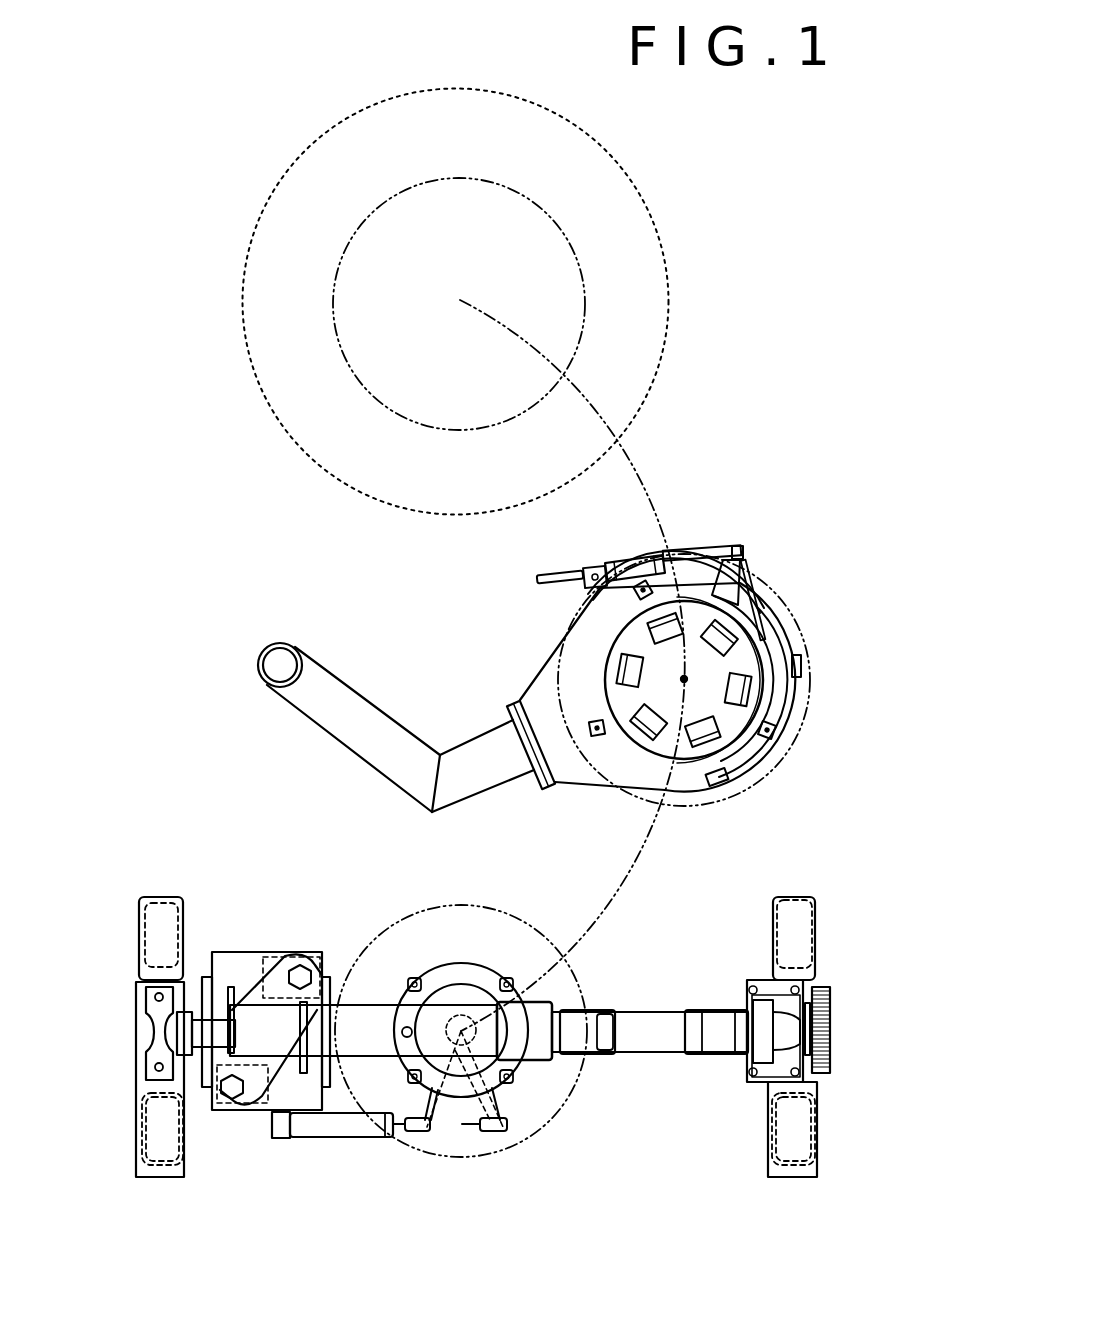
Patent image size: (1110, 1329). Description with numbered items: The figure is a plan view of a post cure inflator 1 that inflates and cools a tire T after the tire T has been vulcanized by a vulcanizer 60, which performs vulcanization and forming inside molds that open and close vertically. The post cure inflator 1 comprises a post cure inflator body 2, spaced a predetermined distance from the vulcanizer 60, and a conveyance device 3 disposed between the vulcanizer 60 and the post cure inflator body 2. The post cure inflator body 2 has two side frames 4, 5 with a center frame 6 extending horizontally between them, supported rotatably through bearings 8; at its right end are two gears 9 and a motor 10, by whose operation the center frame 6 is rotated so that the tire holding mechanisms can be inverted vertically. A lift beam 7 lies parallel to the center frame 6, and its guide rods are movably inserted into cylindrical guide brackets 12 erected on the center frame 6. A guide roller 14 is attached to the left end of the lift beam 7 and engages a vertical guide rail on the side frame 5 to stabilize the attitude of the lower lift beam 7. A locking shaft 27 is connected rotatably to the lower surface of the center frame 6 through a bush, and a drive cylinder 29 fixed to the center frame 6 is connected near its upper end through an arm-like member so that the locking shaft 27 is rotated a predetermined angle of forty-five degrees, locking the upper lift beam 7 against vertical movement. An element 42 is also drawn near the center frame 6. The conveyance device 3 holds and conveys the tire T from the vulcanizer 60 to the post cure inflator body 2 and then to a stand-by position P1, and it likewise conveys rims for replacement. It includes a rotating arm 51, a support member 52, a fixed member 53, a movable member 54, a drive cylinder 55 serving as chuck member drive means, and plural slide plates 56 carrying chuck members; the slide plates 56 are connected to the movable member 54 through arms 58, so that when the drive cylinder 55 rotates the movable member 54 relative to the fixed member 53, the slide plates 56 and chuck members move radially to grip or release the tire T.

The post cure inflator 1 is at (188, 592).
The post cure inflator body 2 is at (228, 862).
The conveyance device 3 is at (377, 602).
The side frame 4 is at (792, 1180).
The side frame 5 is at (158, 1180).
The center frame 6 is at (668, 1055).
The lift beam 7 is at (373, 1023).
The bearing 8 is at (152, 1030).
The gear 9 is at (828, 1027).
The motor 10 is at (716, 1023).
The guide bracket 12 is at (290, 957).
The guide roller 14 is at (200, 1030).
The locking shaft 27 is at (455, 1003).
The drive cylinder 29 is at (342, 1125).
The bushing 42 is at (580, 1030).
The rotating arm 51 is at (373, 727).
The support member 52 is at (540, 698).
The fixed member 53 is at (778, 648).
The movable member 54 is at (797, 667).
The drive cylinder 55 is at (600, 572).
The slide plate 56 is at (657, 630).
The arm 58 is at (760, 627).
The vulcanizer 60 is at (303, 155).
The tire T is at (460, 178).
The stand-by position P1 is at (688, 683).